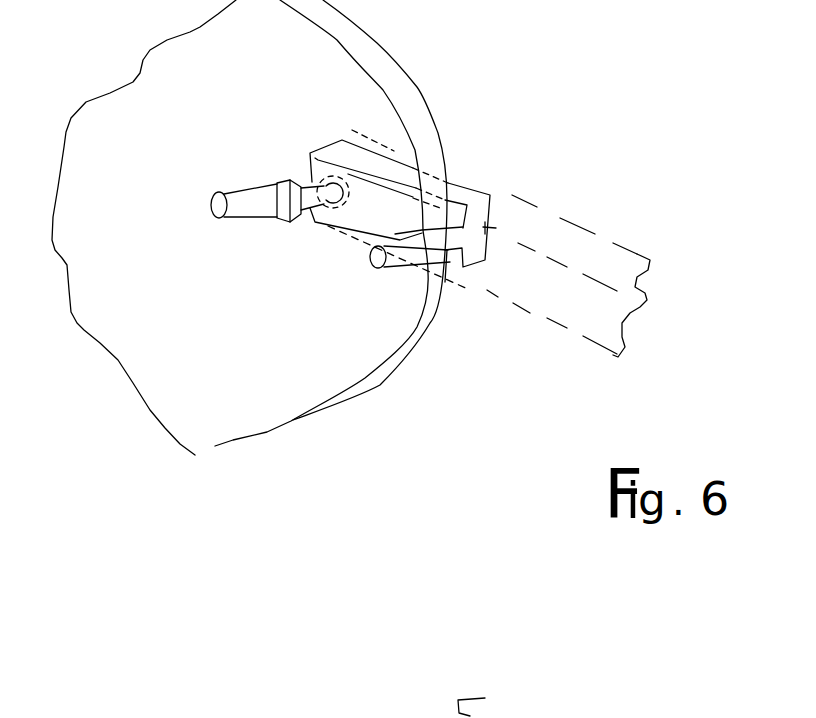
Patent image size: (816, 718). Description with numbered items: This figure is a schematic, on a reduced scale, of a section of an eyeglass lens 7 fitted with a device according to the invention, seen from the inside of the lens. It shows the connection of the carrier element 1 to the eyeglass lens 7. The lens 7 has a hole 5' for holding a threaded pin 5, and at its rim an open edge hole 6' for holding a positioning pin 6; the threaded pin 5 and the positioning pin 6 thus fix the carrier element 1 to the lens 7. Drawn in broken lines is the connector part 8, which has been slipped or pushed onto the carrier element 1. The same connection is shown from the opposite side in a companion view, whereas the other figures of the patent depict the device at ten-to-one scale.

The eyeglass lens 7 is at (112, 123).
The threaded pin 5 is at (224, 330).
The hole 5' is at (426, 117).
The carrier element 1 is at (458, 193).
The positioning pin 6 is at (413, 353).
The open edge hole 6' is at (480, 322).
The connector part 8 is at (582, 222).